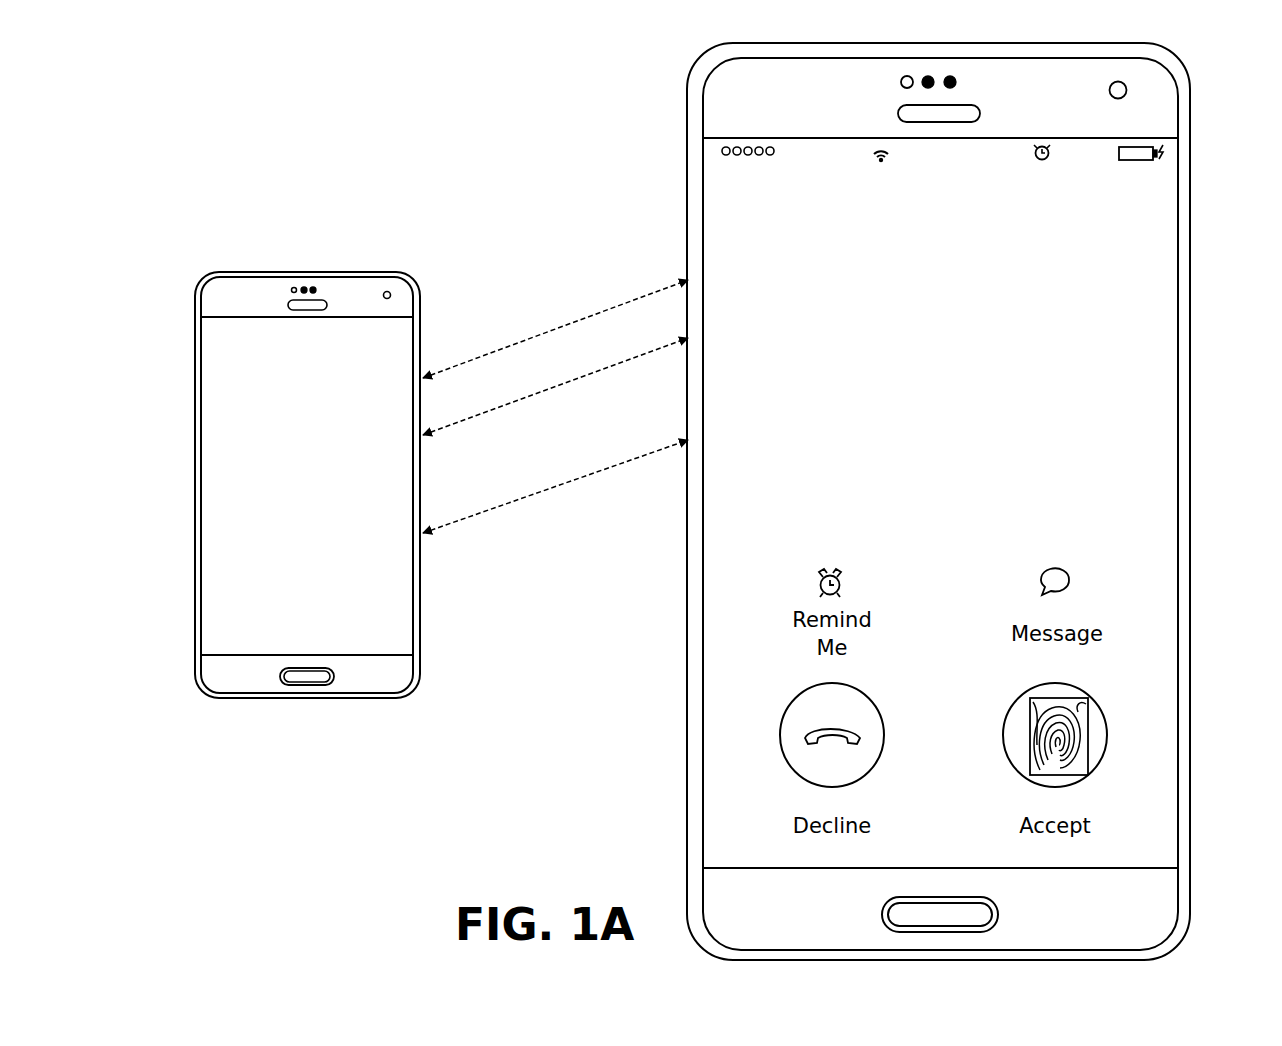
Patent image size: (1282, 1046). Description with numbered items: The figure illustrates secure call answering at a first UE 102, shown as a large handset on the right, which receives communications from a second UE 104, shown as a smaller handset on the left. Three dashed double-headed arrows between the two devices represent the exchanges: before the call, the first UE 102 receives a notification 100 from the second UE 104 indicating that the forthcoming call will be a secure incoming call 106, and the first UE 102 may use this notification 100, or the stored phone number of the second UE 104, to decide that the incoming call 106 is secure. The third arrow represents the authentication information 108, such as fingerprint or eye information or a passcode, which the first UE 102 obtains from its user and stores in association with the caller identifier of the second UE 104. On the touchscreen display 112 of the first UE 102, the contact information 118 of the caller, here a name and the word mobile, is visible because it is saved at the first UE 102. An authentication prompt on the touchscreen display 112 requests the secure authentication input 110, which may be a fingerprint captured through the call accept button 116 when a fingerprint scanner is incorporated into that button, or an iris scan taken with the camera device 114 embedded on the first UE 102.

The notification 100 is at (530, 337).
The first UE 102 is at (1185, 88).
The second UE 104 is at (375, 272).
The incoming call 106 is at (530, 396).
The authentication information 108 is at (530, 492).
The secure authentication input 110 is at (1138, 690).
The touchscreen display 112 is at (1157, 412).
The camera device 114 is at (1126, 95).
The call accept button 116 is at (1103, 750).
The contact information 118 is at (1011, 222).